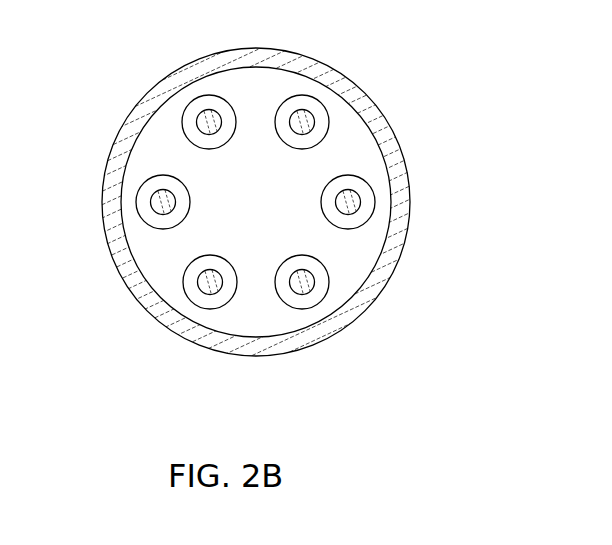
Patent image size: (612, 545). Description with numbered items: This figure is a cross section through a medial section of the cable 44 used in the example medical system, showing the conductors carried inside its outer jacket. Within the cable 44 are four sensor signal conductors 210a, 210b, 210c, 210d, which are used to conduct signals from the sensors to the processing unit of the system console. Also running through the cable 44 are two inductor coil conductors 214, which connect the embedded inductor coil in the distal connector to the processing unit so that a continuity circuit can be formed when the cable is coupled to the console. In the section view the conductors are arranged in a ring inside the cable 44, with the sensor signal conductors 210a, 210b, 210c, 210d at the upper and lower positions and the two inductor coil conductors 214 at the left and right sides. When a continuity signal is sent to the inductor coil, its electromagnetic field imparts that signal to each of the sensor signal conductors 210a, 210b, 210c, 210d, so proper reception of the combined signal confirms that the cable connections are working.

The cable 44 is at (390, 122).
The sensor signal conductor 210a is at (222, 97).
The sensor signal conductor 210b is at (310, 96).
The sensor signal conductor 210c is at (185, 292).
The sensor signal conductor 210d is at (327, 290).
The inductor coil conductor 214 is at (137, 189).